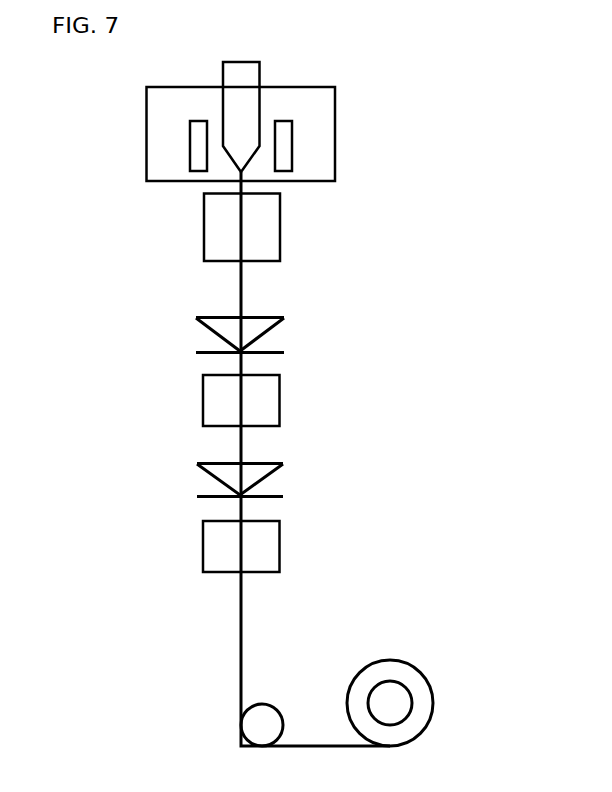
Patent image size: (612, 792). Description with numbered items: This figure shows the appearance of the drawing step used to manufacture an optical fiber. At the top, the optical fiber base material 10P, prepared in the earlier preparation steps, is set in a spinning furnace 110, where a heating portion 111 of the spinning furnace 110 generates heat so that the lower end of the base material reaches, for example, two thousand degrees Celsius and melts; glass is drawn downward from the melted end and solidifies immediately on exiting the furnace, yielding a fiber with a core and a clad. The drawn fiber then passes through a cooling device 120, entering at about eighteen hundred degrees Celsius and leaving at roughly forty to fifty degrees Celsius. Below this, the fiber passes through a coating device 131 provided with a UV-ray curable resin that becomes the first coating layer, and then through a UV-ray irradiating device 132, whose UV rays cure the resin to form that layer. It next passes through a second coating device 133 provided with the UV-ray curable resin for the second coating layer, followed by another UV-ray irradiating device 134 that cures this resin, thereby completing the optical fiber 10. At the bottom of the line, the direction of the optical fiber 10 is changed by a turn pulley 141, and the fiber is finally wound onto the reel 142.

The optical fiber 10 is at (241, 633).
The optical fiber base material 10P is at (242, 120).
The spinning furnace 110 is at (336, 102).
The heating portion 111 is at (282, 148).
The cooling device 120 is at (258, 242).
The coating device 131 is at (255, 327).
The UV-ray irradiating device 132 is at (255, 389).
The coating device 133 is at (255, 470).
The UV-ray irradiating device 134 is at (255, 533).
The turn pulley 141 is at (258, 715).
The reel 142 is at (388, 703).